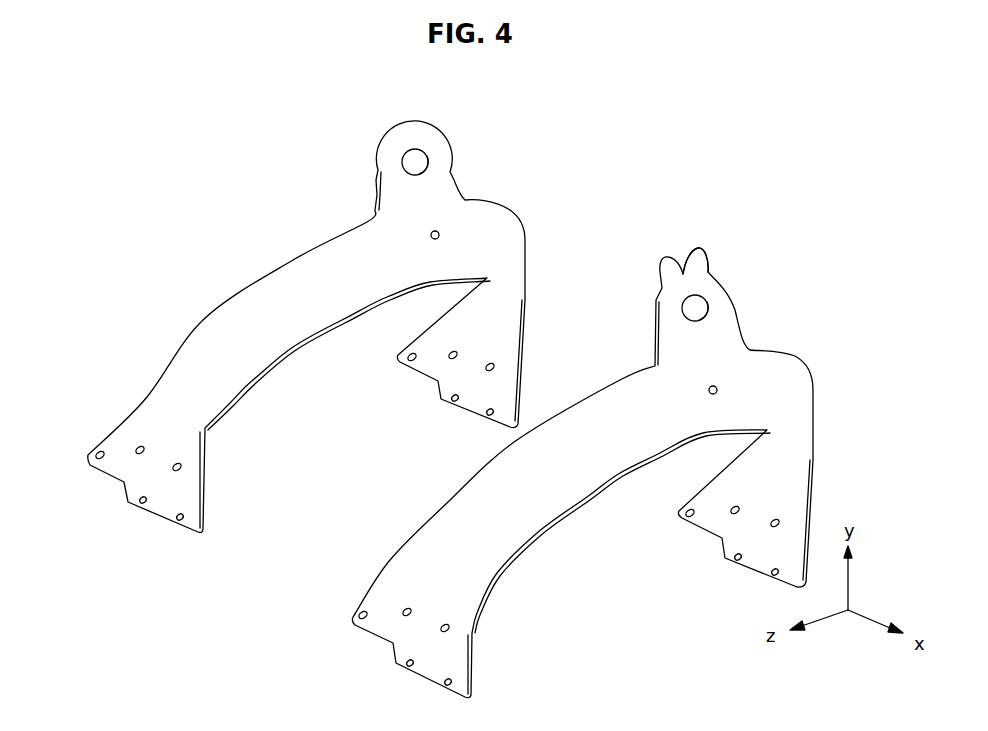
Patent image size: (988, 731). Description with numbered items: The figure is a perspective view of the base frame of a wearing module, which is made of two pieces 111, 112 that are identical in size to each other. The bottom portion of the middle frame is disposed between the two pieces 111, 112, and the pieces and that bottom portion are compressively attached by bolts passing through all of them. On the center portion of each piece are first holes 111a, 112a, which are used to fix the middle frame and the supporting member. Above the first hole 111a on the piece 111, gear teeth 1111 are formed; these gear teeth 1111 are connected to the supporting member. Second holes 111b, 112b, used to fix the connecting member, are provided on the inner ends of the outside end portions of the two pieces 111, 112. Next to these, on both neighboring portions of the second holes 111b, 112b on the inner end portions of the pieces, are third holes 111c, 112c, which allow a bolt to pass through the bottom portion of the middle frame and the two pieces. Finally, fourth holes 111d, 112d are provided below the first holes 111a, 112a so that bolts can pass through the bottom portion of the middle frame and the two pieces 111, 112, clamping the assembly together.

The piece 111 is at (450, 662).
The gear teeth 1111 is at (702, 252).
The first hole 111a is at (697, 306).
The second hole 111b is at (358, 613).
The third holes 111c is at (411, 609).
The fourth hole 111d is at (715, 387).
The piece 112 is at (160, 502).
The first hole 112a is at (417, 158).
The second hole 112b is at (97, 452).
The third holes 112c is at (144, 448).
The fourth hole 112d is at (437, 231).